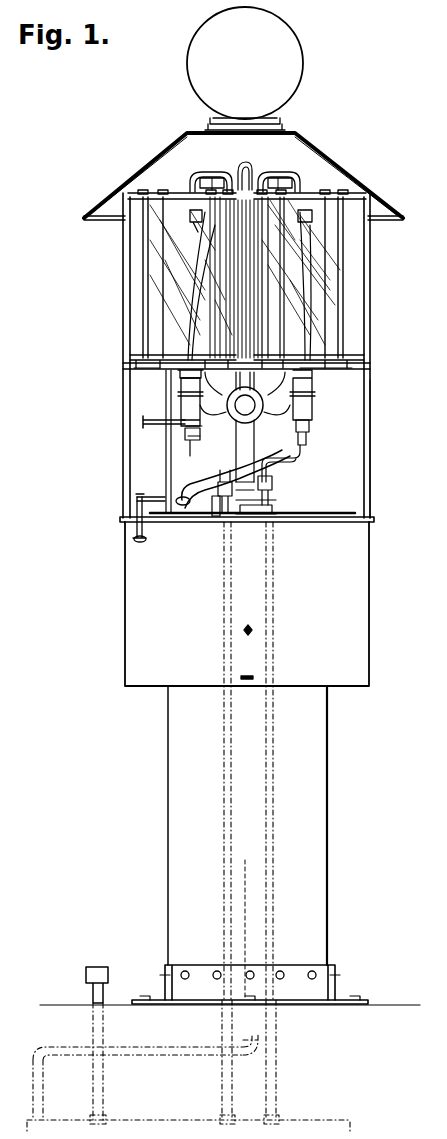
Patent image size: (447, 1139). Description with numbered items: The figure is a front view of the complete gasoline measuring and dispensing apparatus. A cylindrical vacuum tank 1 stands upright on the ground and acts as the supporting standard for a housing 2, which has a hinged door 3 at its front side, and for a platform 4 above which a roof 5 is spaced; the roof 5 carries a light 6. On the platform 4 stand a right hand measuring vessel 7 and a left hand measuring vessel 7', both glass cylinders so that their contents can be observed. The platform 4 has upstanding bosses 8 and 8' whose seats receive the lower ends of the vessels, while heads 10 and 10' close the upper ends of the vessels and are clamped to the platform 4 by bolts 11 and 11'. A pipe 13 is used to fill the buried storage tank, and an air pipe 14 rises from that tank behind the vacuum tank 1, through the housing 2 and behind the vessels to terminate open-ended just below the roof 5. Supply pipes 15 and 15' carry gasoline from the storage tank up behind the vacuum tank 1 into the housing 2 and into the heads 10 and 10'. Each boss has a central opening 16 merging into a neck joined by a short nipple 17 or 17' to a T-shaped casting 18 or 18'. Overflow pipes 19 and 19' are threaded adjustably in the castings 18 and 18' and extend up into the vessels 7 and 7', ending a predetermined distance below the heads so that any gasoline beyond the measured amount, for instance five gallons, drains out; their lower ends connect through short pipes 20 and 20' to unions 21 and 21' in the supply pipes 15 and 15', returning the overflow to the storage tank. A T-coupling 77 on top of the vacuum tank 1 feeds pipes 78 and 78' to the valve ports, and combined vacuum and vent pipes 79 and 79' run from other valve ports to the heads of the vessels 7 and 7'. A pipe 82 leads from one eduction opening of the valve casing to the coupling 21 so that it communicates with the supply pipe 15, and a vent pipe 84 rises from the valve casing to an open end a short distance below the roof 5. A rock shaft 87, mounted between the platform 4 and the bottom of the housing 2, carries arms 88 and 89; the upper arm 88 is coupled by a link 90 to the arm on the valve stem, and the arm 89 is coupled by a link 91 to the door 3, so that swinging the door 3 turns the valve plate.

The cylindrical vacuum tank 1 is at (314, 798).
The housing 2 is at (367, 414).
The hinged door 3 is at (247, 604).
The platform 4 is at (355, 362).
The roof 5 is at (330, 168).
The light 6 is at (245, 63).
The right hand measuring vessel 7 is at (324, 275).
The left hand measuring vessel 7' is at (162, 275).
The upstanding boss 8 is at (320, 343).
The upstanding boss 8' is at (162, 351).
The head 10 is at (346, 176).
The head 10' is at (137, 176).
The bolts 11 is at (358, 277).
The bolts 11' is at (124, 277).
The pipe 13 is at (96, 990).
The pipe 14 is at (260, 866).
The supply pipe 15 is at (300, 623).
The supply pipe 15' is at (199, 618).
The central opening 16 is at (308, 1124).
The short nipple 17 is at (225, 702).
The short nipple 17' is at (145, 380).
The T-shaped casting 18 is at (321, 395).
The T-shaped casting 18' is at (146, 402).
The overflow pipe 19 is at (344, 285).
The overflow pipe 19' is at (153, 285).
The short pipe 20 is at (301, 463).
The short pipe 20' is at (233, 479).
The union 21 is at (298, 487).
The union 21' is at (198, 512).
The T-coupling 77 is at (248, 518).
The pipe 78 is at (283, 502).
The pipe 78' is at (208, 525).
The combined vacuum and vent pipe 79 is at (319, 422).
The combined vacuum and vent pipe 79' is at (170, 443).
The pipe 82 is at (275, 440).
The vent pipe 84 is at (246, 166).
The rock shaft 87 is at (166, 392).
The upper arm 88 is at (150, 431).
The arm 89 is at (147, 498).
The link 90 is at (186, 440).
The link 91 is at (134, 514).